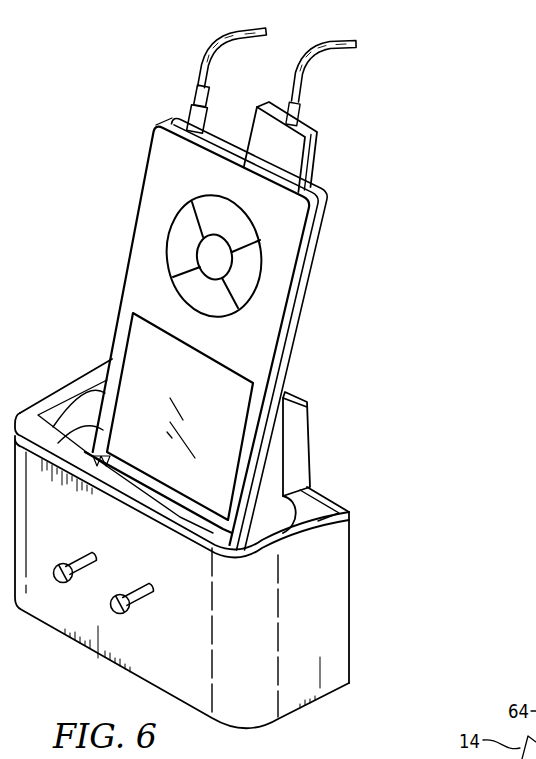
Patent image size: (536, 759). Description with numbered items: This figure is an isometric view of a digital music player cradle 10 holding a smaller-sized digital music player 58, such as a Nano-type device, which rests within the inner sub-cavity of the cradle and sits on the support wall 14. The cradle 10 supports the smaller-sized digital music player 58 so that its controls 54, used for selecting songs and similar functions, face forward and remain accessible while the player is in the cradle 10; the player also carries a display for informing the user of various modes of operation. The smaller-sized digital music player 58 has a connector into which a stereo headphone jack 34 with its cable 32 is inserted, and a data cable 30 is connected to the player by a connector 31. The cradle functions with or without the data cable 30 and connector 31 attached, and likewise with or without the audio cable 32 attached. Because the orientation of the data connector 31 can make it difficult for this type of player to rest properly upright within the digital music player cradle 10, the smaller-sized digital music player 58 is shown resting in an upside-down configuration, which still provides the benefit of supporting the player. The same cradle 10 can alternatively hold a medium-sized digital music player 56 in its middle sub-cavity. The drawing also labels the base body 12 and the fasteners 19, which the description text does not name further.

The digital music player cradle 10 is at (383, 556).
The base housing 12 is at (184, 658).
The support wall 14 is at (288, 395).
The screws 19 is at (80, 556).
The data cable 30 is at (333, 54).
The connector 31 is at (318, 165).
The cable 32 is at (233, 33).
The stereo headphone jack 34 is at (190, 110).
The controls 54 is at (178, 237).
The medium-sized digital music player 56 is at (148, 352).
The smaller-sized digital music player 58 is at (322, 205).